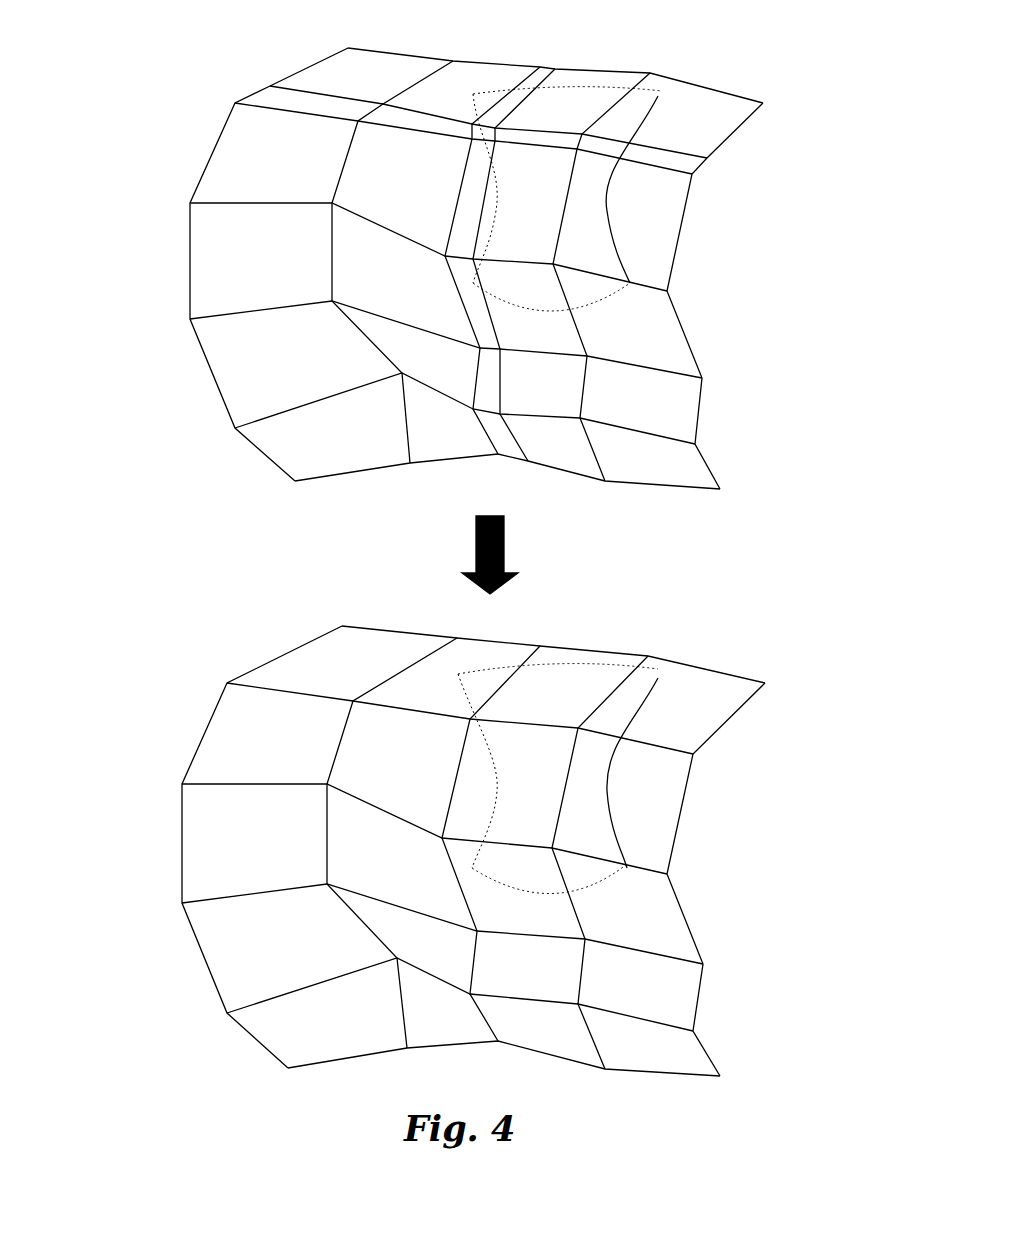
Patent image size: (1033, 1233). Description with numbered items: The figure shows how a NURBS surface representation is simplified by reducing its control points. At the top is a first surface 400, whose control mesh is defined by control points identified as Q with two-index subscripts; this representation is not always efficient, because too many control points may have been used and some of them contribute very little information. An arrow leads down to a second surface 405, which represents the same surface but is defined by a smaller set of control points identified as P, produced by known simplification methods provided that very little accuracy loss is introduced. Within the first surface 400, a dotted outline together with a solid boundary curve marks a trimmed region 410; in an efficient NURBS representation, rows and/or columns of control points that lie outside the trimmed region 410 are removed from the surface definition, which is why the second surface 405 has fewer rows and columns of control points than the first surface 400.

The first surface 400 is at (152, 267).
The second surface 405 is at (142, 850).
The trimmed region 410 is at (607, 208).